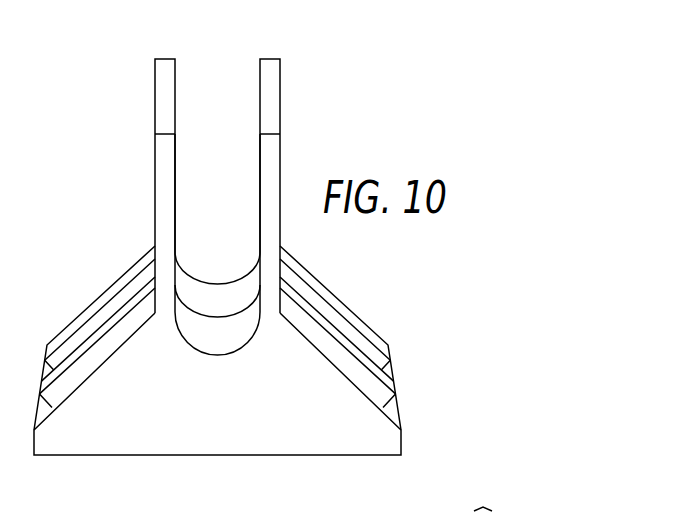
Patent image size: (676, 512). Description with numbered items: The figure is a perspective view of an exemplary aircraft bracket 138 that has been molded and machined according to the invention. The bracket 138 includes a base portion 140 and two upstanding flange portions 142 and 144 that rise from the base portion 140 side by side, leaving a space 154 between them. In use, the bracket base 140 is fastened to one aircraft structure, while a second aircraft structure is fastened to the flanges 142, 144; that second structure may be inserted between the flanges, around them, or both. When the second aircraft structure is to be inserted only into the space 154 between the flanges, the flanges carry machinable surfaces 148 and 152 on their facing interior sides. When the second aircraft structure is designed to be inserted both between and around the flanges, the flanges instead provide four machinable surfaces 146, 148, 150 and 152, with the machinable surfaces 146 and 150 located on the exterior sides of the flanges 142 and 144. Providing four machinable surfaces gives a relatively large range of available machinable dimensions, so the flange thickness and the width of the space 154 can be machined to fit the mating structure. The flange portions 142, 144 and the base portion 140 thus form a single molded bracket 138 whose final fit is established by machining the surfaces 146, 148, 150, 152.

The aircraft bracket 138 is at (128, 155).
The base portion 140 is at (180, 433).
The flange portion 142 is at (272, 83).
The flange portion 144 is at (162, 103).
The machinable surface 146 is at (280, 162).
The machinable surface 148 is at (260, 147).
The machinable surface 150 is at (157, 207).
The machinable surface 152 is at (177, 150).
The space 154 is at (237, 210).